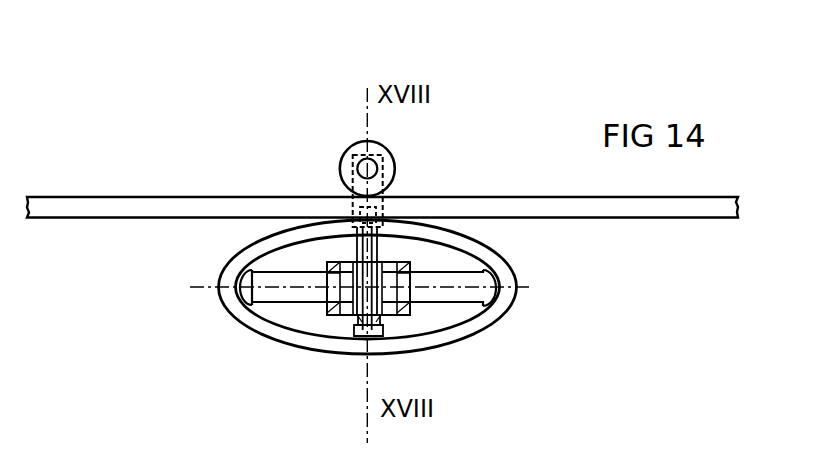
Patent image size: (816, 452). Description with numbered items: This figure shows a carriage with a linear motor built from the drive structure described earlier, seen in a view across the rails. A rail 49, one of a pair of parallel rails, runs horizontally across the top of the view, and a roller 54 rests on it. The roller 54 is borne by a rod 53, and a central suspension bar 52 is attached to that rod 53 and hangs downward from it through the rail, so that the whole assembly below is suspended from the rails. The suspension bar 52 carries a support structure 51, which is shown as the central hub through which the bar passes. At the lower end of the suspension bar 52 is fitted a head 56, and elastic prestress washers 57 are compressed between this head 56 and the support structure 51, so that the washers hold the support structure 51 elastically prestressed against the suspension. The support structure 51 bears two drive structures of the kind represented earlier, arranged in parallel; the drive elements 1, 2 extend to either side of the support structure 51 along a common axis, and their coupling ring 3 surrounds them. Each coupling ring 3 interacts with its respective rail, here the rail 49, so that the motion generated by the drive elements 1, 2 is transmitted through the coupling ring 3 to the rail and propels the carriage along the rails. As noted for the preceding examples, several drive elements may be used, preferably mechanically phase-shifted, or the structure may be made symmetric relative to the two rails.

The drive element 1 is at (307, 284).
The drive element 2 is at (450, 285).
The coupling ring 3 is at (221, 288).
The rail 49 is at (137, 201).
The support structure 51 is at (395, 262).
The central suspension bar 52 is at (363, 247).
The rod 53 is at (379, 168).
The roller 54 is at (341, 168).
The head 56 is at (367, 357).
The elastic prestress washers 57 is at (353, 322).